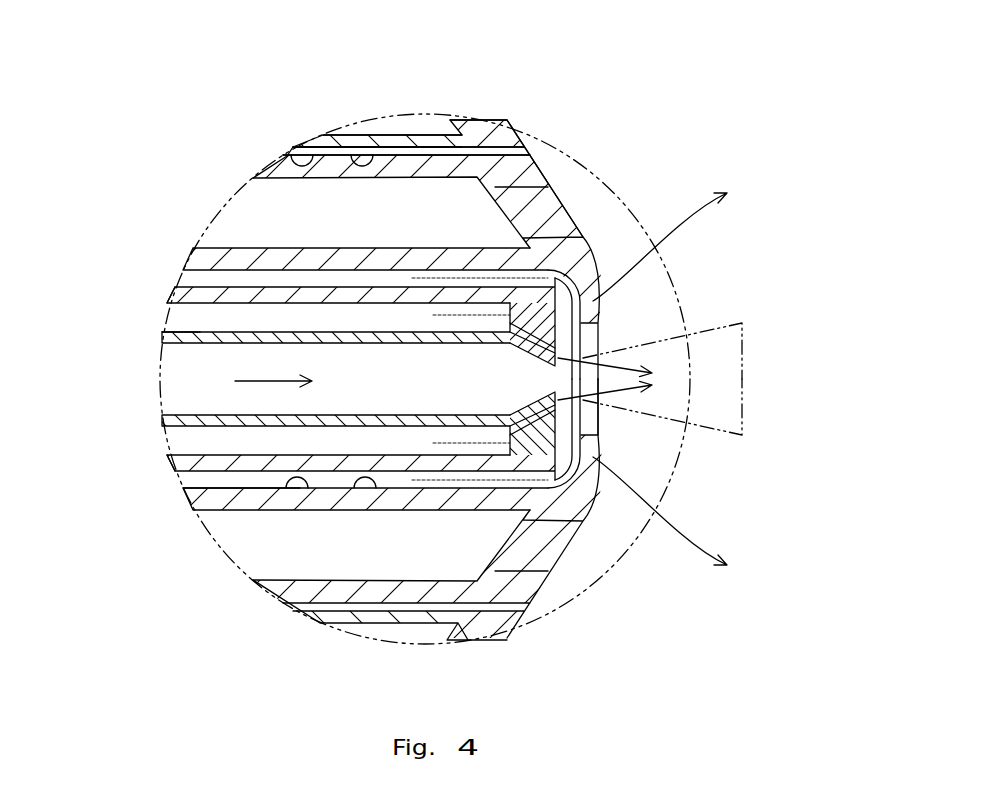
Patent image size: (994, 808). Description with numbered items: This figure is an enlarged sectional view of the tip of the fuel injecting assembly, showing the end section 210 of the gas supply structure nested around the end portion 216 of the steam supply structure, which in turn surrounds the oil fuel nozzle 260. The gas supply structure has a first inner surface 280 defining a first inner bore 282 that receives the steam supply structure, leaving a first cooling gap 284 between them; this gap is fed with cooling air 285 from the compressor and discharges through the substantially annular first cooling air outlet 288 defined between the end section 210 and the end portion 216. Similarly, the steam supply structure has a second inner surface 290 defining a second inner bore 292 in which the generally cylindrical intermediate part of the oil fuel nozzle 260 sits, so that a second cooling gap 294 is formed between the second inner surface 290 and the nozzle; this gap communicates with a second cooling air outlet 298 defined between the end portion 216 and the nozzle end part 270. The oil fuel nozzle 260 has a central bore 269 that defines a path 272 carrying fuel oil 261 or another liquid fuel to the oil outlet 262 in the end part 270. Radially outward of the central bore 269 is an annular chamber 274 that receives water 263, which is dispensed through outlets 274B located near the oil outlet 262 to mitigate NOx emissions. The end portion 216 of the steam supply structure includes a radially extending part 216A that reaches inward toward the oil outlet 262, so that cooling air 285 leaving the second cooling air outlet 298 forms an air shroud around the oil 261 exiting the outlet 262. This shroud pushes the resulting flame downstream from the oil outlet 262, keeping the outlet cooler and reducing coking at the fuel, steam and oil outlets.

The end section 210 is at (515, 128).
The end portion 216 is at (505, 235).
The radially extending part 216A is at (580, 337).
The oil fuel nozzle 260 is at (163, 463).
The fuel oil 261 is at (742, 370).
The oil outlet 262 is at (565, 348).
The water 263 is at (507, 442).
The central bore 269 is at (193, 343).
The end part 270 is at (549, 276).
The path 272 is at (272, 381).
The annular chamber 274 is at (205, 427).
The outlets 274B is at (525, 248).
The first inner surface 280 is at (290, 158).
The first inner bore 282 is at (365, 160).
The first cooling gap 284 is at (402, 152).
The cooling air 285 is at (672, 222).
The first cooling air outlet 288 is at (542, 168).
The second inner surface 290 is at (363, 478).
The second inner bore 292 is at (305, 478).
The second cooling gap 294 is at (243, 481).
The second cooling air outlet 298 is at (600, 435).